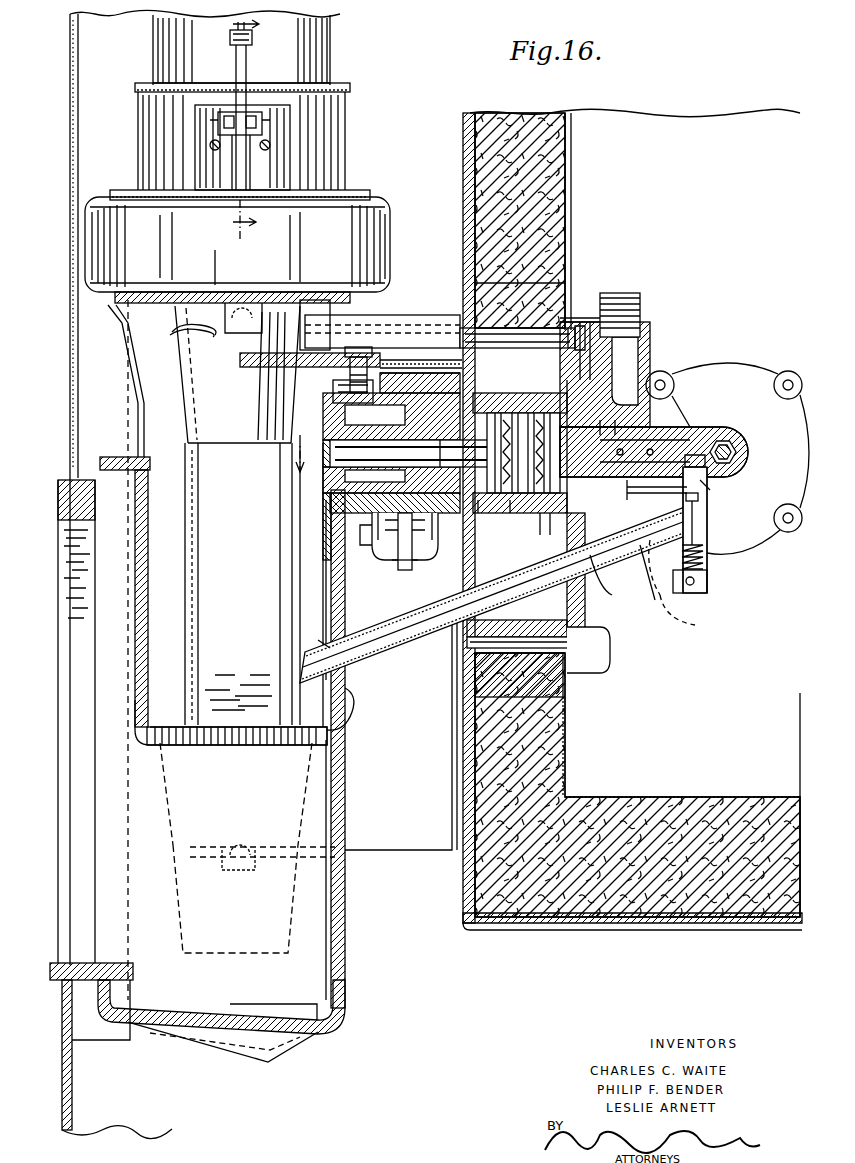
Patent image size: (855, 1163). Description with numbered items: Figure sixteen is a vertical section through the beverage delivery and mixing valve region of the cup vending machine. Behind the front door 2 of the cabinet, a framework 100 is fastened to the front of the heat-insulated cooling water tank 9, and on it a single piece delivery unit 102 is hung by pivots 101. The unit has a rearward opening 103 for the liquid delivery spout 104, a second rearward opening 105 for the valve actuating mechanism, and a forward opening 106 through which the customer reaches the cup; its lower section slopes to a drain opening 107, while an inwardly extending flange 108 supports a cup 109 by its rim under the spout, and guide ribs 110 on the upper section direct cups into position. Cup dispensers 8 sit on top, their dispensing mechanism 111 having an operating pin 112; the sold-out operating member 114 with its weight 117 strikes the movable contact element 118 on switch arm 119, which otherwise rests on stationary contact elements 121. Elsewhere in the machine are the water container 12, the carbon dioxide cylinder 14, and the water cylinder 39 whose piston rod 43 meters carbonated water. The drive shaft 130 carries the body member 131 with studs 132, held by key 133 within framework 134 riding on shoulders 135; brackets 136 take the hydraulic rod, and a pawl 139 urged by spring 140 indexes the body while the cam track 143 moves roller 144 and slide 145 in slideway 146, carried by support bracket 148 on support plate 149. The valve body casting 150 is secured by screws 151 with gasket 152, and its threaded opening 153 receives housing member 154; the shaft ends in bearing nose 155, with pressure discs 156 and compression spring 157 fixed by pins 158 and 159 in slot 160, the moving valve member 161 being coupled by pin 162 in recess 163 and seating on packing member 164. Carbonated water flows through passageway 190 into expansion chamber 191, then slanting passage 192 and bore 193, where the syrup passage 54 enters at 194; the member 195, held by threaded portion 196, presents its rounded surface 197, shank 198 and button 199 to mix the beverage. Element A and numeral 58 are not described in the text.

The front door 2 is at (70, 376).
The panel A is at (65, 760).
The cup dispenser 8 is at (327, 52).
The cooling water tank 9 is at (465, 190).
The water container 12 is at (311, 451).
The carbon dioxide cylinder 14 is at (229, 129).
The water cylinder 39 is at (742, 387).
The piston rod 43 is at (731, 442).
The syrup passage 54 is at (688, 614).
The lever 58 is at (610, 597).
The framework 100 is at (398, 848).
The pivot 101 is at (262, 322).
The delivery unit 102 is at (346, 788).
The rearward opening 103 is at (346, 690).
The liquid delivery spout 104 is at (405, 647).
The second rearward opening 105 is at (333, 575).
The forward opening 106 is at (140, 677).
The drain opening 107 is at (297, 1017).
The inwardly extending flange 108 is at (247, 748).
The cup 109 is at (222, 975).
The guide ribs 110 is at (280, 663).
The dispensing mechanism 111 is at (237, 244).
The operating pin 112 is at (220, 300).
The operating member 114 is at (247, 72).
The weight 117 is at (232, 40).
The movable contact element 118 is at (218, 120).
The switch arm 119 is at (214, 141).
The stationary contact elements 121 is at (243, 170).
The drive shaft 130 is at (410, 453).
The body member 131 is at (432, 453).
The projecting studs 132 is at (368, 378).
The key 133 is at (327, 453).
The framework 134 is at (335, 510).
The shoulders 135 is at (327, 500).
The brackets 136 is at (412, 565).
The pawl 139 is at (380, 580).
The spring 140 is at (413, 540).
The cam track 143 is at (343, 385).
The roller 144 is at (375, 345).
The slide 145 is at (255, 368).
The slideway 146 is at (432, 340).
The support bracket 148 is at (420, 383).
The support plate 149 is at (520, 395).
The valve body casting 150 is at (644, 345).
The screws 151 is at (572, 318).
The gasket 152 is at (568, 312).
The threaded opening 153 is at (640, 362).
The housing member 154 is at (633, 312).
The bearing nose 155 is at (640, 430).
The pressure discs 156 is at (372, 560).
The compression spring 157 is at (515, 505).
The pin 158 is at (478, 500).
The pin 159 is at (491, 453).
The slot 160 is at (520, 410).
The moving valve member 161 is at (495, 594).
The pin 162 is at (674, 386).
The recess 163 is at (485, 530).
The packing member 164 is at (676, 432).
The passageway 190 is at (700, 477).
The expansion chamber 191 is at (738, 460).
The slanting passage 192 is at (708, 548).
The bore 193 is at (658, 597).
The syrup opening 194 is at (652, 612).
The member 195 is at (708, 588).
The screw threaded portion 196 is at (710, 580).
The rounded lower surface 197 is at (212, 338).
The shank 198 is at (700, 512).
The button 199 is at (708, 492).